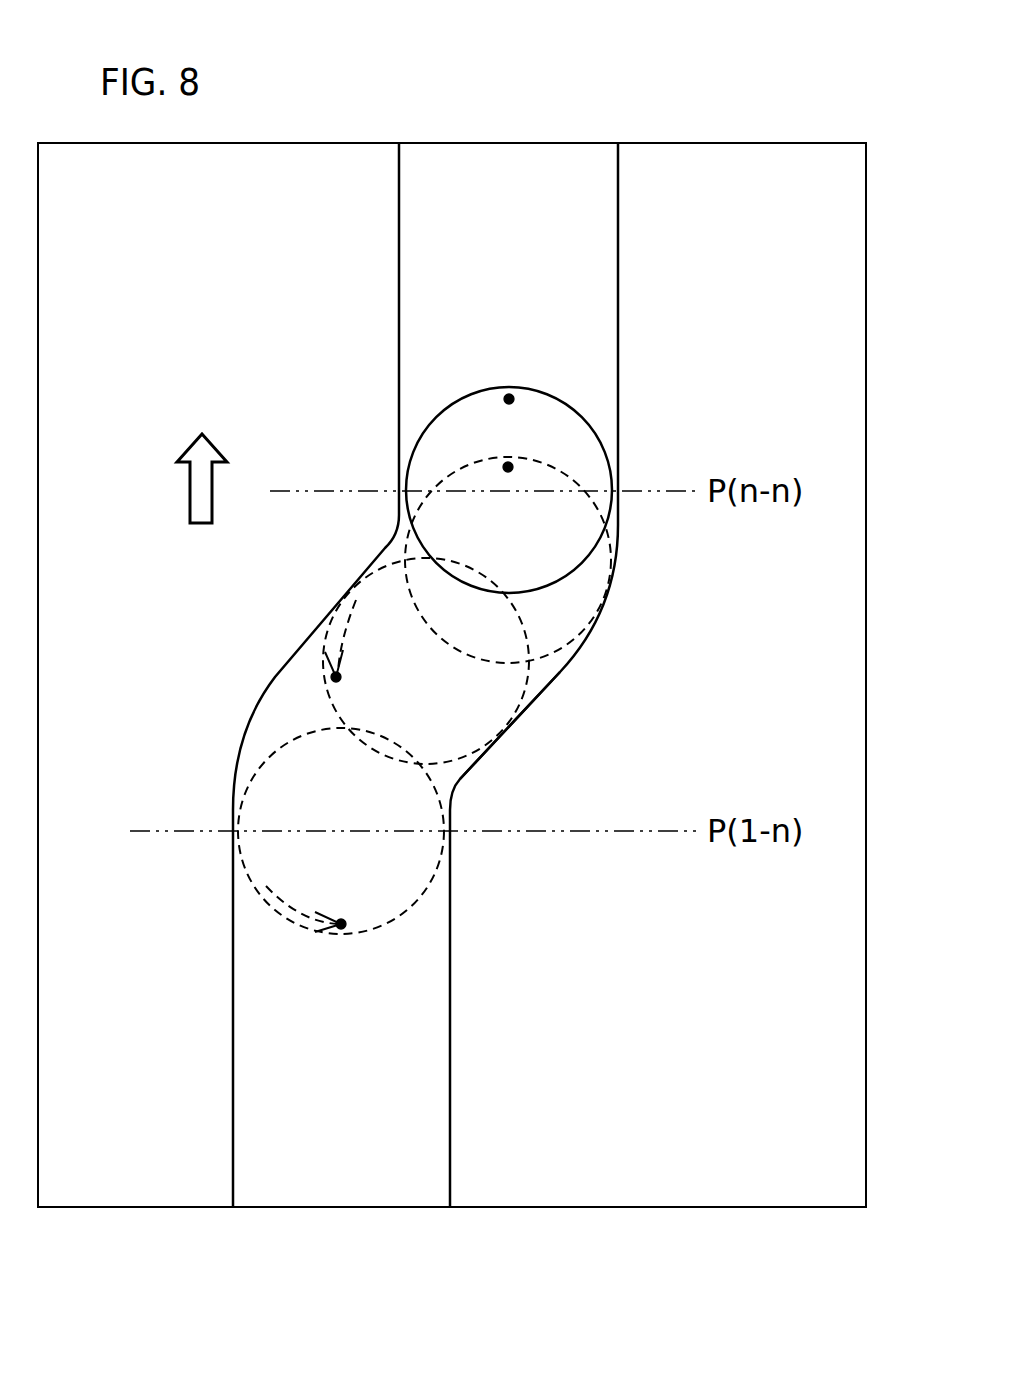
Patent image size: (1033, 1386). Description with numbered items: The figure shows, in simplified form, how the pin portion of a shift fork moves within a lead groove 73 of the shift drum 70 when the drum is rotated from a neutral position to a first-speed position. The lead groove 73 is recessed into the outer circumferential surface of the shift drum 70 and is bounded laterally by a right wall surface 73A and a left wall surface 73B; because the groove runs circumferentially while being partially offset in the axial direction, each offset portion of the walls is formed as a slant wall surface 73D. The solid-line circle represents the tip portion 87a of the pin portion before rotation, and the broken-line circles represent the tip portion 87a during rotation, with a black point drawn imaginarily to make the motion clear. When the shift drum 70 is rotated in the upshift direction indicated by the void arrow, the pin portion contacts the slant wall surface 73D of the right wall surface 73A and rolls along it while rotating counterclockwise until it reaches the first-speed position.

The shift drum 70 is at (104, 1162).
The lead groove 73 is at (507, 726).
The right wall surface 73A is at (618, 237).
The left wall surface 73B is at (399, 237).
The slant wall surface 73D is at (546, 692).
The tip portion 87a is at (562, 430).